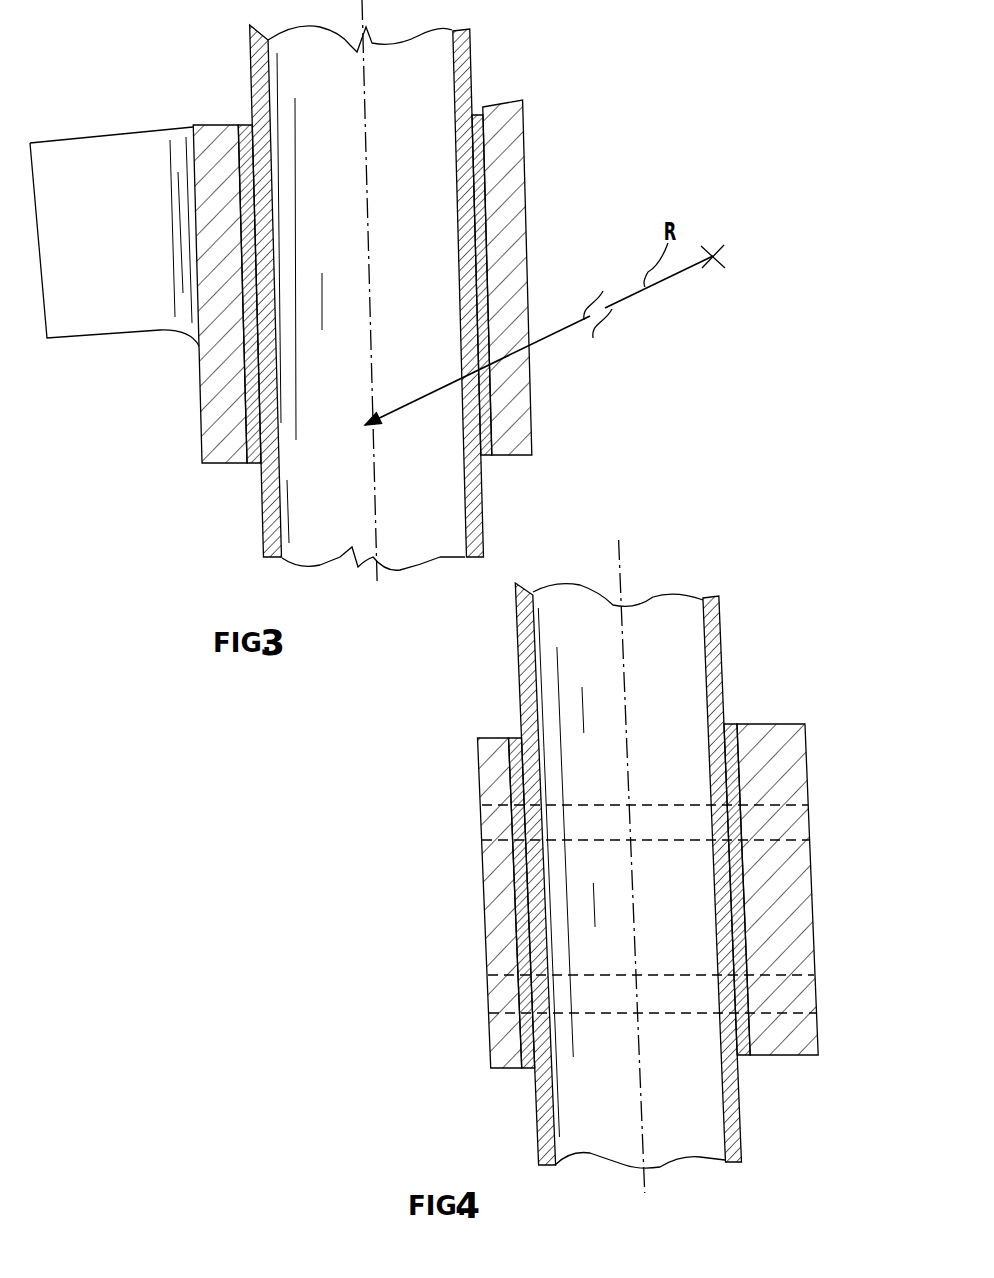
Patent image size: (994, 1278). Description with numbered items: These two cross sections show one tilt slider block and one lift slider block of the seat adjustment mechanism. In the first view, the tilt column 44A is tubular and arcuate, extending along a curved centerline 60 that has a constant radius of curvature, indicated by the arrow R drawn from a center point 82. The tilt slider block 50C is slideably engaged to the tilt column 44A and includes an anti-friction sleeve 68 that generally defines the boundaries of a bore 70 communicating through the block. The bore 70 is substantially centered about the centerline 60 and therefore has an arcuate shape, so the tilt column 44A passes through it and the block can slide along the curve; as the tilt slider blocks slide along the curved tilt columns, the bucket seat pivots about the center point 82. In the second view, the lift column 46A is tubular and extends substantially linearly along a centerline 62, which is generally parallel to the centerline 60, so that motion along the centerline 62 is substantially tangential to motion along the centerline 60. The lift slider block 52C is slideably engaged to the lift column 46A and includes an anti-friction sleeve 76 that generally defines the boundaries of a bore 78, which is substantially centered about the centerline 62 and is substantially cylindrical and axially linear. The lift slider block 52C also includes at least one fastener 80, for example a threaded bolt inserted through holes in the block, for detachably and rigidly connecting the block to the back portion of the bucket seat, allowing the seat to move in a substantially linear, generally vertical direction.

In FIG. 3, the tilt column 44A is at (251, 107).
In FIG. 3, the anti-friction sleeve 68 is at (258, 432).
In FIG. 3, the bore 70 is at (318, 396).
In FIG. 3, the centerline 60 is at (360, 227).
In FIG. 3, the tilt slider block 50C is at (537, 100).
In FIG. 3, the center point 82 is at (713, 256).
In FIG. 4, the lift column 46A is at (520, 707).
In FIG. 4, the anti-friction sleeve 76 is at (540, 1048).
In FIG. 4, the bore 78 is at (572, 776).
In FIG. 4, the centerline 62 is at (624, 685).
In FIG. 4, the lift slider block 52C is at (788, 704).
In FIG. 4, the fastener 80 is at (488, 995).